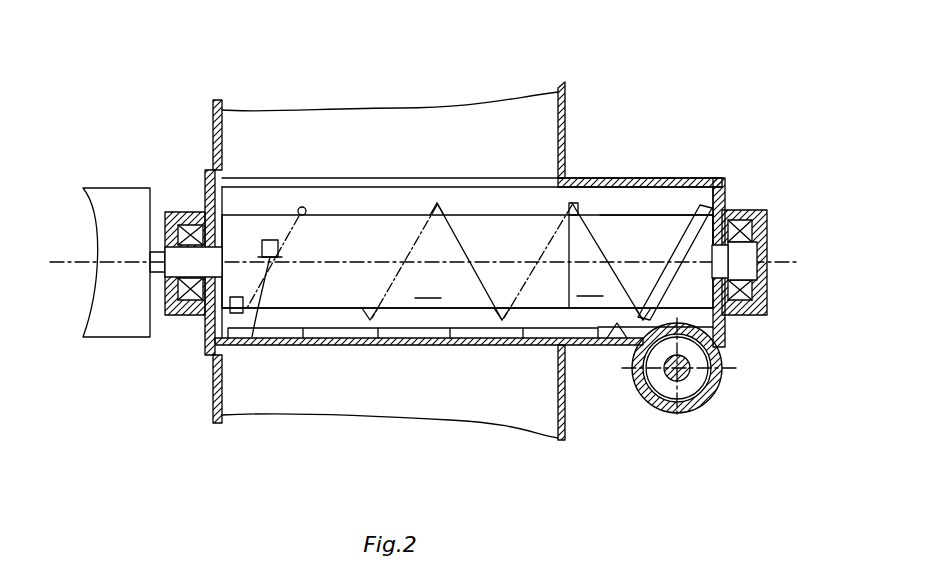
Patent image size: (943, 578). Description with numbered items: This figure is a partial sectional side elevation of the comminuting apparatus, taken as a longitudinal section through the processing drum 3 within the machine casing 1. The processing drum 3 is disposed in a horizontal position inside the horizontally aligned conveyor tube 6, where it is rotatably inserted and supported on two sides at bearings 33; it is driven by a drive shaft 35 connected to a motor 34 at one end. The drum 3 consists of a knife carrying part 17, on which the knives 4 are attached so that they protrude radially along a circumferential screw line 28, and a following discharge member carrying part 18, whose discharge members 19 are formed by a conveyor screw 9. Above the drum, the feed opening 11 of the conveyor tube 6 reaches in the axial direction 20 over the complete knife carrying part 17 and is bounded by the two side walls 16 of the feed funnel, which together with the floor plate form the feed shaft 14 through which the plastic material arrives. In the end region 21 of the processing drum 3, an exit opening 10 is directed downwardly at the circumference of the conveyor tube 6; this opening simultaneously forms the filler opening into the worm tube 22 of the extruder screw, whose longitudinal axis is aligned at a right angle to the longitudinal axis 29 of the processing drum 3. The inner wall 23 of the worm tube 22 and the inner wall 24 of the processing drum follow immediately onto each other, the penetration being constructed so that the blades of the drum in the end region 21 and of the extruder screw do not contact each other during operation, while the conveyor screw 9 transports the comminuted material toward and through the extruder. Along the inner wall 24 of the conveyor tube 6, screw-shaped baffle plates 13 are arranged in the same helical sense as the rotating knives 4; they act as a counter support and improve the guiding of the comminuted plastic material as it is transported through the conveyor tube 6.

The machine casing 1 is at (213, 420).
The processing drum 3 is at (450, 235).
The knives 4 is at (300, 207).
The conveyor tube 6 is at (600, 180).
The conveyor screw 9 is at (682, 235).
The exit opening 10 is at (730, 335).
The feed opening 11 is at (372, 180).
The baffle plates 13 is at (355, 330).
The feed shaft 14 is at (212, 198).
The side walls 16 is at (222, 127).
The knife carrying part 17 is at (328, 240).
The discharge member carrying part 18 is at (608, 232).
The discharge members 19 is at (702, 203).
The axial direction 20 is at (420, 202).
The end region 21 is at (714, 190).
The worm tube 22 is at (667, 408).
The inner wall of worm tube 23 is at (660, 372).
The inner wall 24 is at (617, 326).
The circumferential screw line 28 is at (540, 243).
The longitudinal axis 29 is at (462, 265).
The bearings 33 is at (182, 292).
The motor 34 is at (112, 228).
The drive shaft 35 is at (157, 257).